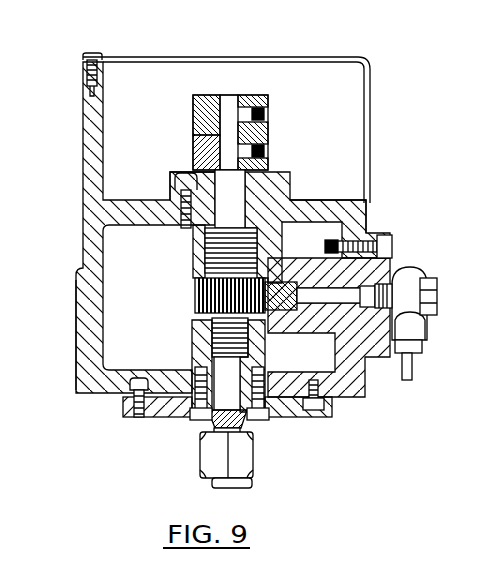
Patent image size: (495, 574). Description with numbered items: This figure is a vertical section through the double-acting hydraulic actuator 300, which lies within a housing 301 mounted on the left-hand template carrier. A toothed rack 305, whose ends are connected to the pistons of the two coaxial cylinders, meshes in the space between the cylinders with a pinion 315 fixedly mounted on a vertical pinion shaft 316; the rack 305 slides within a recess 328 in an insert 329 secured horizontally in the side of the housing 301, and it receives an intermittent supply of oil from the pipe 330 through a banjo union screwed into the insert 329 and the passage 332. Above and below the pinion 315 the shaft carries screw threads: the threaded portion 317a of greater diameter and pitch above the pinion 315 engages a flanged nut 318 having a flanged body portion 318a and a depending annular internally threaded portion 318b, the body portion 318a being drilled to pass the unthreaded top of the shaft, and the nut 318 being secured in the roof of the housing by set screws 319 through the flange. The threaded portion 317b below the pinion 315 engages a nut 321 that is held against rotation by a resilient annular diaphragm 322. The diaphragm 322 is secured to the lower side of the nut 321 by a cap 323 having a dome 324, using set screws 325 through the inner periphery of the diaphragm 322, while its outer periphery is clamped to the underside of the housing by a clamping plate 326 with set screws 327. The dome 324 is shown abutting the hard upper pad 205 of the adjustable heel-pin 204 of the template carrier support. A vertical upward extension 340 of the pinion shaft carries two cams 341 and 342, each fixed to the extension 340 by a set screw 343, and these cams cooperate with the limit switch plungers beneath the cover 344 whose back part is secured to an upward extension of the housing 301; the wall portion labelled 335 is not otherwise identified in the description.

The heel-pin 204 is at (246, 484).
The hard upper pad 205 is at (216, 462).
The double-acting hydraulic actuator 300 is at (68, 304).
The housing 301 is at (86, 246).
The toothed rack 305 is at (329, 327).
The pinion 315 is at (195, 295).
The pinion shaft 316 is at (172, 195).
The threaded portion 317a is at (205, 262).
The threaded portion 317b is at (208, 333).
The flanged nut 318 is at (297, 173).
The flanged body portion 318a is at (268, 187).
The depending annular internally threaded portion 318b is at (198, 248).
The set screws 319 is at (190, 180).
The nut 321 is at (194, 355).
The resilient annular diaphragm 322 is at (285, 416).
The cap 323 is at (250, 428).
The dome 324 is at (256, 466).
The set screws 325 is at (202, 420).
The clamping plate 326 is at (128, 407).
The set screws 327 is at (148, 418).
The recess 328 is at (313, 251).
The insert 329 is at (390, 262).
The pipe 330 is at (410, 367).
The passage 332 is at (392, 293).
The housing wall 335 is at (81, 132).
The vertical upward extension 340 is at (232, 117).
The cam 341 is at (193, 144).
The cam 342 is at (262, 101).
The set screw 343 is at (264, 116).
The cover 344 is at (284, 57).